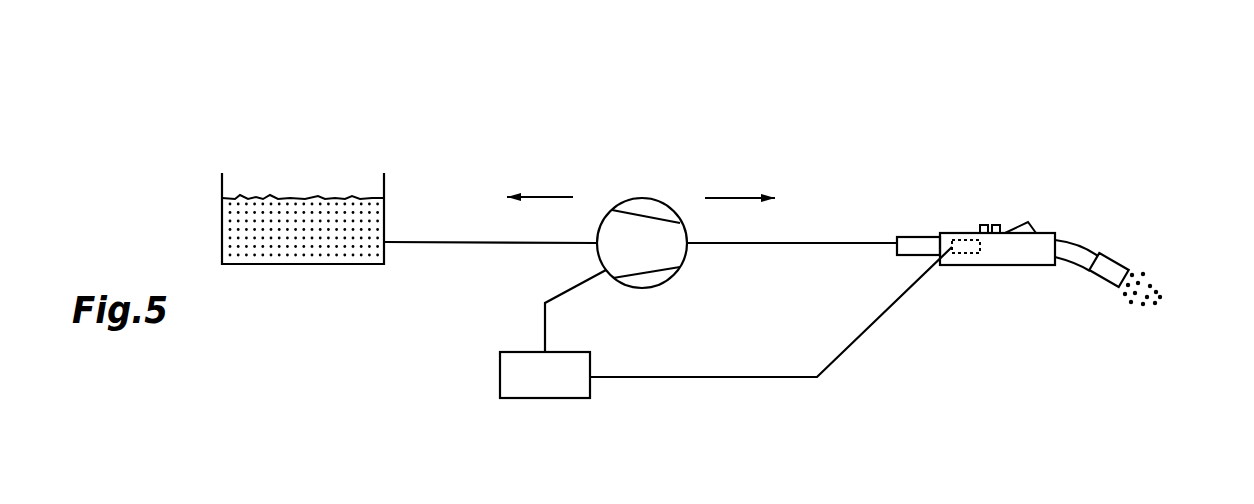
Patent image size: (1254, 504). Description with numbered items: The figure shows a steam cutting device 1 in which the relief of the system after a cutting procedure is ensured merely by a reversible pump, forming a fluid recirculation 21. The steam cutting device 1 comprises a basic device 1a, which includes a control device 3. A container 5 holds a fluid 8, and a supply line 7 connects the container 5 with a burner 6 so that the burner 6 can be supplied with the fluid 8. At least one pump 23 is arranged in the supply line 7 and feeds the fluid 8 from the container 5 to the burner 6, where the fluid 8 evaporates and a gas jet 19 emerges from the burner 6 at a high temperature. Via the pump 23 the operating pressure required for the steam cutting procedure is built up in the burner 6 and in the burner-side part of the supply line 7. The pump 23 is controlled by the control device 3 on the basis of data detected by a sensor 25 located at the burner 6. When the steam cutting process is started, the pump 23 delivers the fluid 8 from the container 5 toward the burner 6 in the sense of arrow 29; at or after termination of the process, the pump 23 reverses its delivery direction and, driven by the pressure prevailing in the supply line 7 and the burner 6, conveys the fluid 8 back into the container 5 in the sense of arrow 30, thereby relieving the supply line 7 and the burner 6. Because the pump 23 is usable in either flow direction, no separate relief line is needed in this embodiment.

The steam cutting device 1 is at (299, 92).
The basic device 1a is at (780, 162).
The fluid recirculation 21 is at (197, 141).
The container 5 is at (247, 285).
The fluid 8 is at (298, 220).
The supply line 7 is at (500, 247).
The arrow 30 is at (547, 197).
The arrow 29 is at (735, 198).
The pump 23 is at (637, 245).
The control device 3 is at (528, 377).
The burner 6 is at (958, 290).
The sensor 25 is at (973, 257).
The gas jet 19 is at (1157, 272).